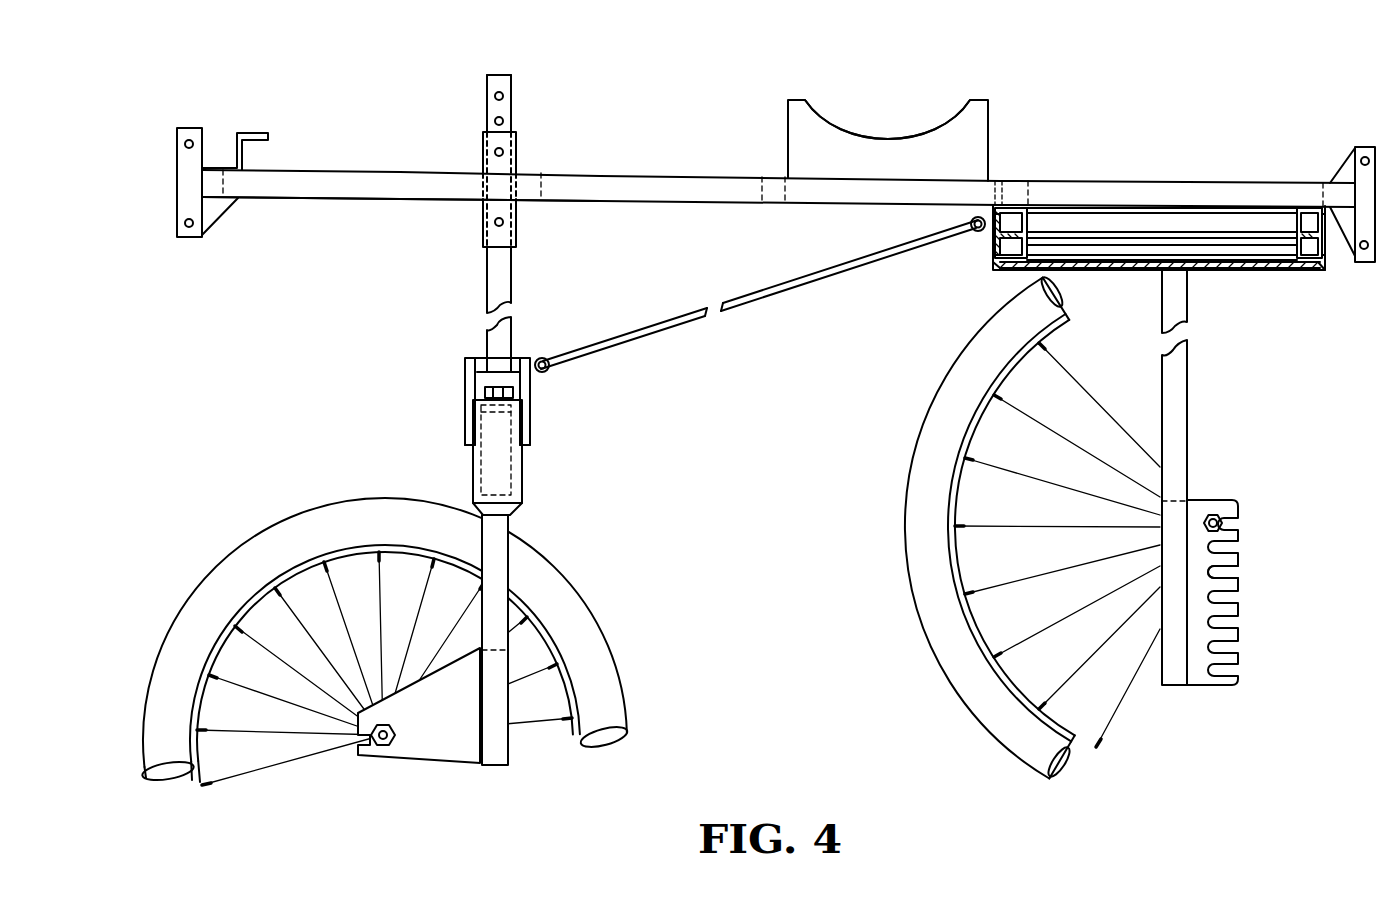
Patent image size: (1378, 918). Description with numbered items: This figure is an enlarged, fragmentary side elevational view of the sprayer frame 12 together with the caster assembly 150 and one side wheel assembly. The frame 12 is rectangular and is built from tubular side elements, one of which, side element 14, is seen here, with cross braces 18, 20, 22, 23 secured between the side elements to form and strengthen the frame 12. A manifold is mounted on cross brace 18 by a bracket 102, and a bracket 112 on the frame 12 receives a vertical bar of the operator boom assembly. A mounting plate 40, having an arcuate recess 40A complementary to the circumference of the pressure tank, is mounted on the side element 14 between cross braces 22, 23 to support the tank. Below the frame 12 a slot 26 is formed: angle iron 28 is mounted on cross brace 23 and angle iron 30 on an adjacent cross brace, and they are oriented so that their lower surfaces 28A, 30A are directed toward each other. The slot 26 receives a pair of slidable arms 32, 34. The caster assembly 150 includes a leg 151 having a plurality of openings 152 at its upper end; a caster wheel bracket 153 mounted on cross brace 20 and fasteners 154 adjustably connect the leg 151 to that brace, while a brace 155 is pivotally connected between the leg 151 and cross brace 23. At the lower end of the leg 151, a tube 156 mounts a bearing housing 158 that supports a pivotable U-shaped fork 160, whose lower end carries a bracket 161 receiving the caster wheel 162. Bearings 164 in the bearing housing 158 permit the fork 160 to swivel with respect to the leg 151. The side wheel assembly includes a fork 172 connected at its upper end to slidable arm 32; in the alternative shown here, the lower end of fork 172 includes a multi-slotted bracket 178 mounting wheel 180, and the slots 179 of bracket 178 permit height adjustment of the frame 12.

The frame 12 is at (638, 174).
The side element 14 is at (684, 201).
The cross brace 18 is at (222, 182).
The cross brace 20 is at (543, 173).
The cross brace 22 is at (758, 194).
The cross brace 23 is at (1028, 197).
The slot 26 is at (1149, 269).
The angle iron 28 is at (1000, 250).
The lower surface 28A is at (1003, 270).
The angle iron 30 is at (1328, 262).
The lower surface 30A is at (1310, 264).
The slidable arm 32 is at (1025, 218).
The slidable arm 34 is at (1297, 247).
The mounting plate 40 is at (790, 110).
The arcuate recess 40A is at (916, 112).
The bracket 102 is at (247, 133).
The bracket 112 is at (1366, 148).
The caster assembly 150 is at (452, 436).
The leg 151 is at (500, 284).
The openings 152 is at (505, 97).
The caster wheel bracket 153 is at (485, 215).
The fasteners 154 is at (504, 222).
The brace 155 is at (686, 325).
The tube 156 is at (465, 378).
The bearing housing 158 is at (520, 460).
The fork 160 is at (503, 520).
The bracket 161 is at (428, 750).
The wheel 162 is at (593, 667).
The bearings 164 is at (518, 494).
The fork 172 is at (1178, 428).
The multi-slotted bracket 178 is at (1232, 507).
The slots 179 is at (1237, 576).
The wheel 180 is at (912, 545).